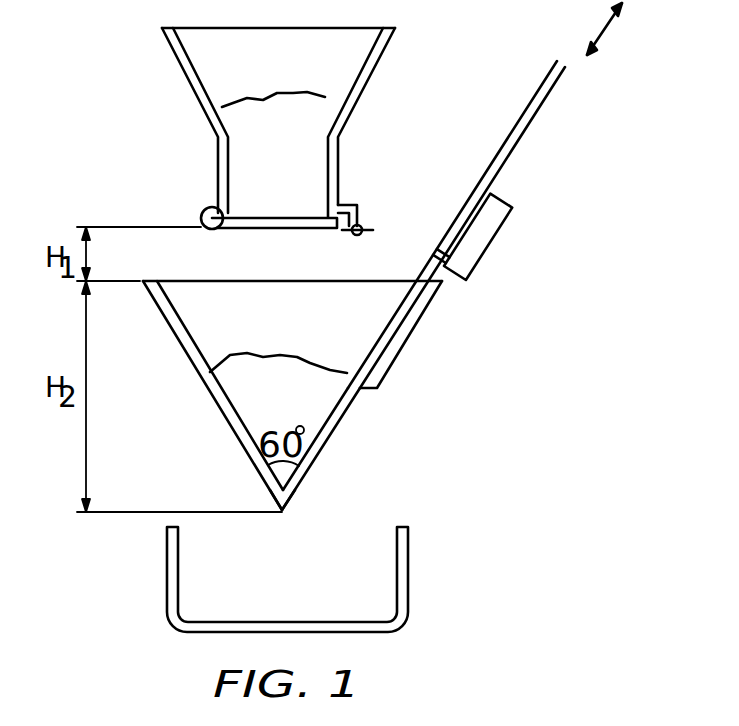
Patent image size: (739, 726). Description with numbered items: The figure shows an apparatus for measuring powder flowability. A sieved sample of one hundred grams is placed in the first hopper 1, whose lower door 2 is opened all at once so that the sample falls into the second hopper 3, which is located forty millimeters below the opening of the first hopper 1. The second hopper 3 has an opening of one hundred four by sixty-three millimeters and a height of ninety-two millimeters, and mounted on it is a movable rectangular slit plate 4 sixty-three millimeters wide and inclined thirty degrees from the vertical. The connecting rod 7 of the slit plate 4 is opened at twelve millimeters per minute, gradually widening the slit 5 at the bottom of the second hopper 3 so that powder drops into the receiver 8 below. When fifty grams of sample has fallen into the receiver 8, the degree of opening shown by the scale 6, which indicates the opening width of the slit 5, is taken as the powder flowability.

The first hopper 1 is at (182, 70).
The lower door 2 is at (270, 228).
The second hopper 3 is at (210, 399).
The movable rectangular slit plate 4 is at (333, 428).
The slit 5 is at (283, 511).
The scale 6 is at (485, 250).
The connecting rod 7 is at (533, 117).
The receiver 8 is at (260, 622).